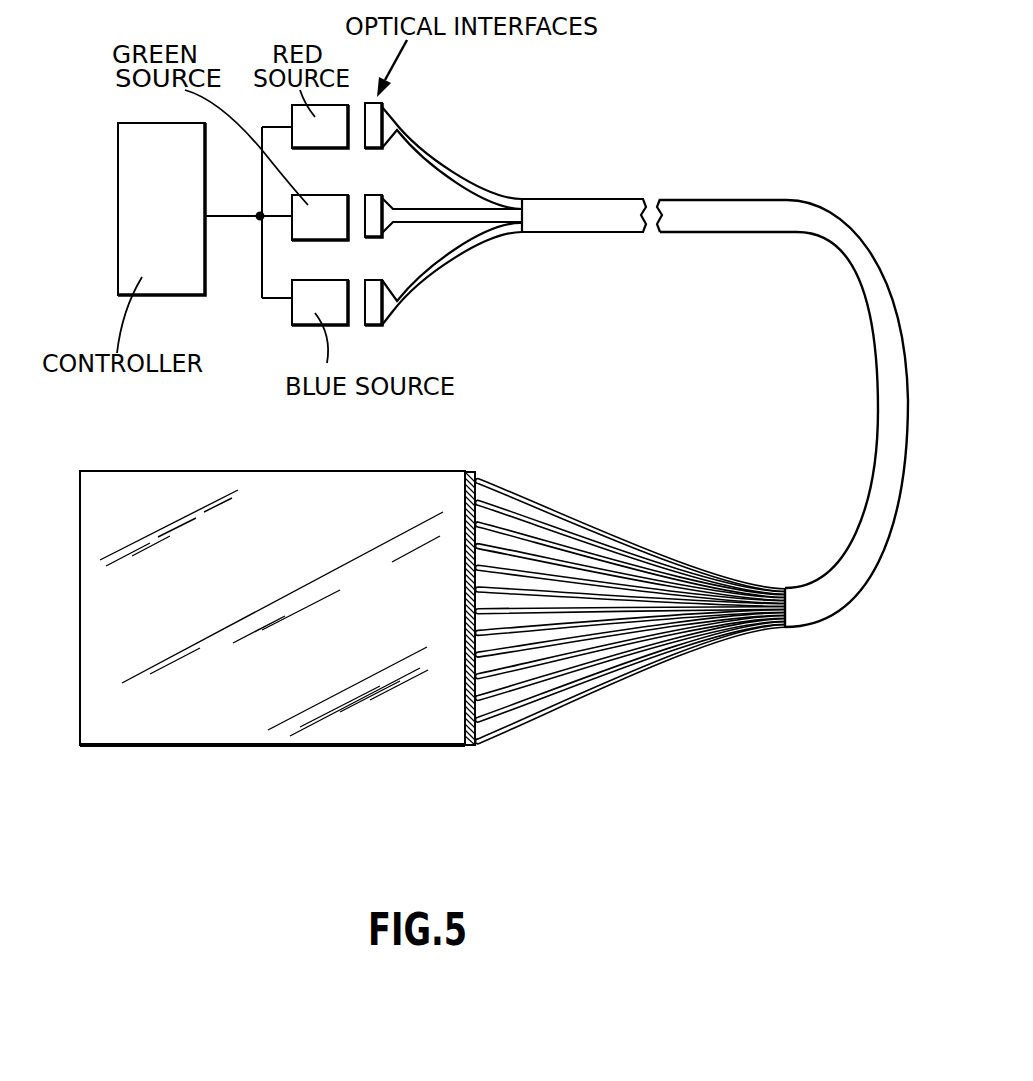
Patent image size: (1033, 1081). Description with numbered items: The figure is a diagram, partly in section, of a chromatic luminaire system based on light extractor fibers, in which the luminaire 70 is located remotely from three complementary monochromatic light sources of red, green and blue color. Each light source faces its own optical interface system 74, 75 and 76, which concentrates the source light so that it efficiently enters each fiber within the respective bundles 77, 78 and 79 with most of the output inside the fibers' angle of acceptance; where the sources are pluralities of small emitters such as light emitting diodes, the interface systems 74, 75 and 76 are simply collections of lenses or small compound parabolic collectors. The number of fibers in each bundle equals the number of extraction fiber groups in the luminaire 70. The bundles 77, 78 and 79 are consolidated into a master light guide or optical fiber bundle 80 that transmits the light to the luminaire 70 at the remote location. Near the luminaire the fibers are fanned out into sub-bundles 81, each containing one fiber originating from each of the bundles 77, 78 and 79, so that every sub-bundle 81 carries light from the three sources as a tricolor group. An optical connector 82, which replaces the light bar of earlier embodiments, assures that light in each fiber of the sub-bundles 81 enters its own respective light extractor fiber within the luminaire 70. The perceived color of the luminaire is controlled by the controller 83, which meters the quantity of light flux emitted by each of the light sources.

The luminaire 70 is at (236, 452).
The optical interface system 74 is at (372, 142).
The optical interface system 75 is at (372, 232).
The optical interface system 76 is at (372, 323).
The optical fiber bundle 77 is at (500, 192).
The optical fiber bundle 78 is at (453, 212).
The optical fiber bundle 79 is at (462, 250).
The master light guide 80 is at (800, 223).
The sub-bundles 81 is at (613, 550).
The optical connector 82 is at (472, 747).
The controller 83 is at (122, 197).